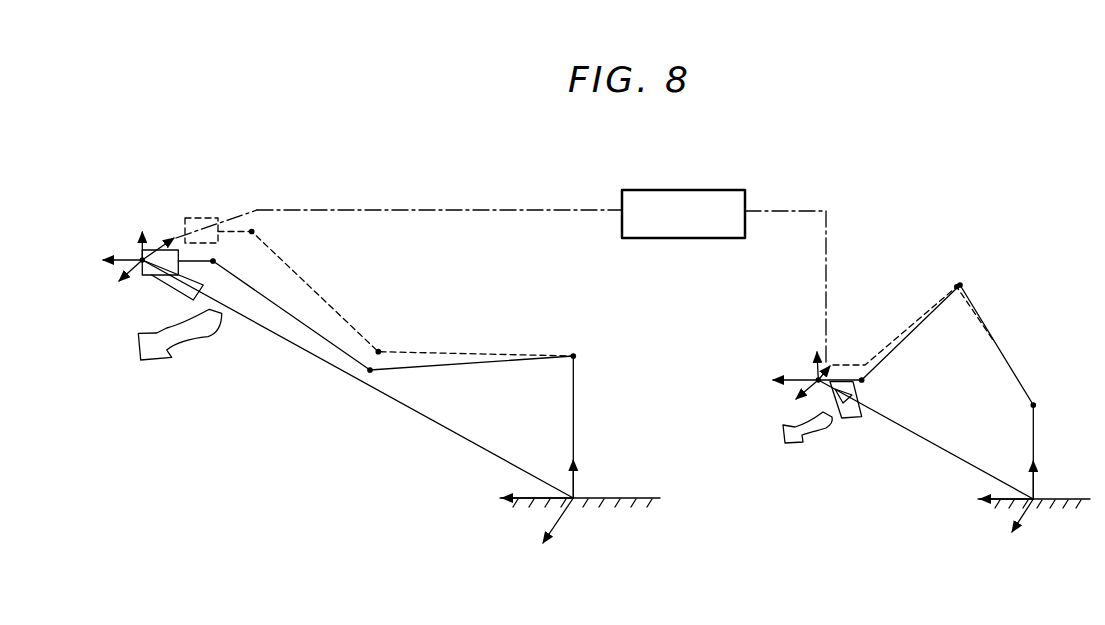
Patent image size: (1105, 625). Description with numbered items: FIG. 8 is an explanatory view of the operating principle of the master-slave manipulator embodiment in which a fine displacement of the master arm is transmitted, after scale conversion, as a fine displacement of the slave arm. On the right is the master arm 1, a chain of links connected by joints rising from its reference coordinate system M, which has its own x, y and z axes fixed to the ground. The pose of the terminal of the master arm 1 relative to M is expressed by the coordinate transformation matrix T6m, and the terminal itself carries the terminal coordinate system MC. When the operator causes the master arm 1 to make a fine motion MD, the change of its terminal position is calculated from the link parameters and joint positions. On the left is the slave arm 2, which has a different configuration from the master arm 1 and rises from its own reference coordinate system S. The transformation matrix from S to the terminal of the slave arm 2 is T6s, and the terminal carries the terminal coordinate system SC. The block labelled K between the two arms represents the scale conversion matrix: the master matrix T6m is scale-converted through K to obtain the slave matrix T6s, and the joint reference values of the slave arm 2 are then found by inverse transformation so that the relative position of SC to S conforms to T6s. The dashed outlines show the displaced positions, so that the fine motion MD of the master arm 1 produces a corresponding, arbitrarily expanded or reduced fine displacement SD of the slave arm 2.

The master arm 1 is at (1014, 358).
The slave arm 2 is at (510, 348).
The scale conversion matrix K is at (501, 276).
The terminal coordinate system of the slave arm SC is at (113, 259).
The slave hand direction SD is at (164, 238).
The terminal coordinate system of the master arm MC is at (788, 378).
The fine motion of the master arm MD is at (830, 365).
The reference coordinate system of the slave arm S is at (570, 502).
The reference coordinate system of the master arm M is at (1025, 495).
The slave arm coordinate transformation matrix T6s is at (388, 395).
The master arm coordinate transformation matrix T6m is at (905, 432).